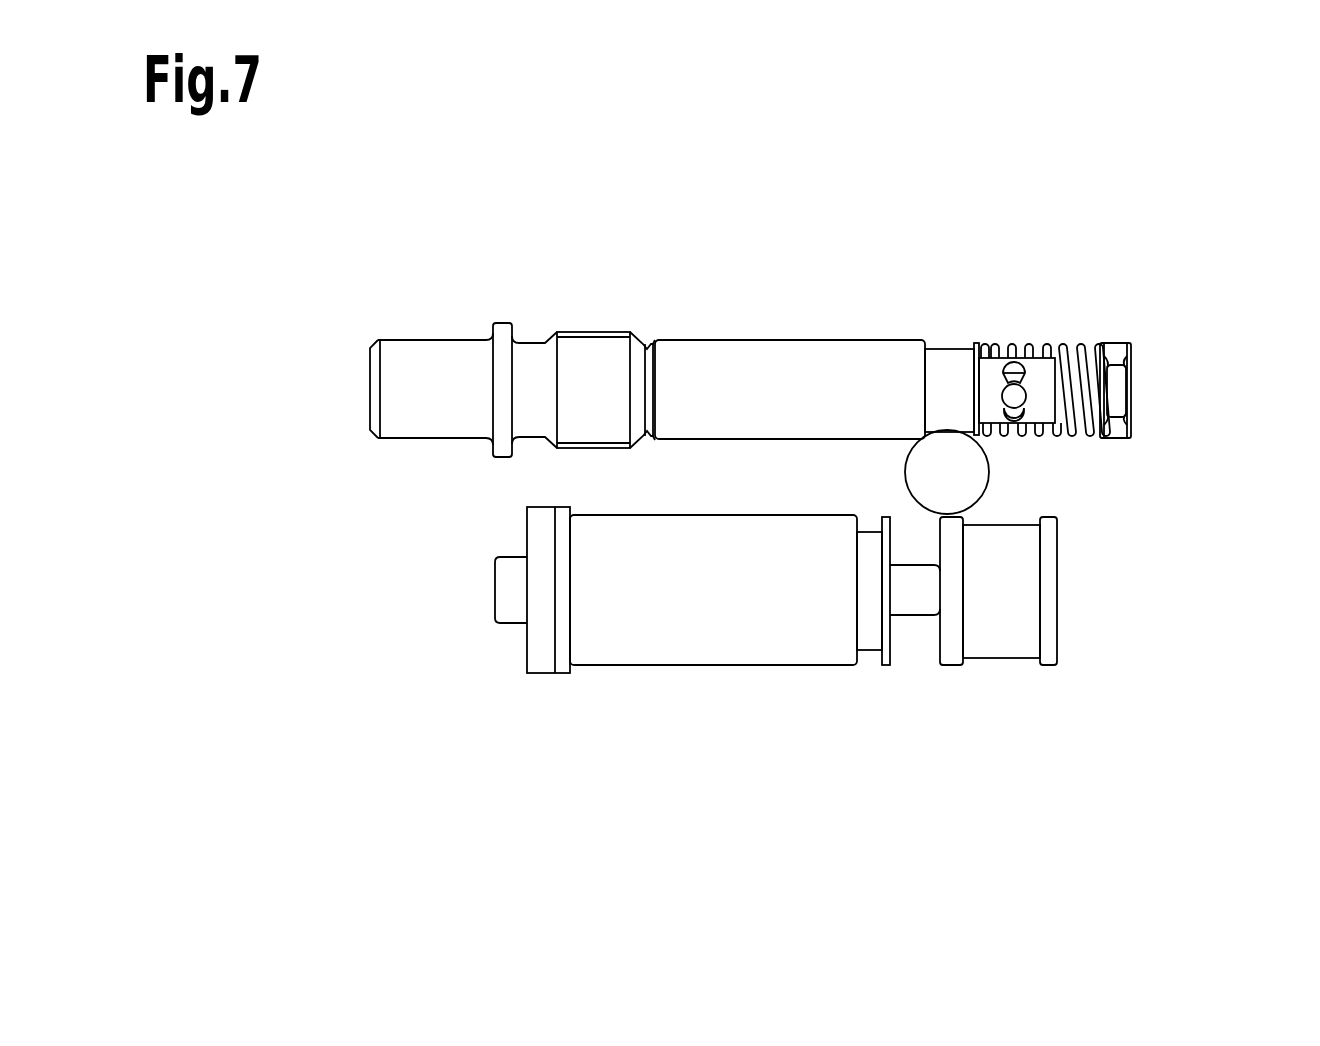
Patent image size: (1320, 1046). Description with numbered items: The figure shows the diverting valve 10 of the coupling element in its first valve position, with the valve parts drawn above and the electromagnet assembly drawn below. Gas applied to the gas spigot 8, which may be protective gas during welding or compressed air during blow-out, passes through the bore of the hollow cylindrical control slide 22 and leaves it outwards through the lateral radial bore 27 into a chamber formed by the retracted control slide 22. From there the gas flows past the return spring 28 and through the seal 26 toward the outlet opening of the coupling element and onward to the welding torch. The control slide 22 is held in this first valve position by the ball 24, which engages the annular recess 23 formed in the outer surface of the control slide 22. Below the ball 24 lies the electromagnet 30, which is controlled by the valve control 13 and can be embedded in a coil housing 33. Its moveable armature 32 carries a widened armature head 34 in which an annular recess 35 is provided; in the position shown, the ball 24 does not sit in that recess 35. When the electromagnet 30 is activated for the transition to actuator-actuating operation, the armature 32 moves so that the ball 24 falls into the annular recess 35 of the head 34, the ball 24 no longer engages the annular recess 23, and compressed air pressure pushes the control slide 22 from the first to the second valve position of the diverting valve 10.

The gas spigot 8 is at (398, 358).
The diverting valve 10 is at (864, 284).
The valve control 13 is at (542, 655).
The control slide 22 is at (695, 355).
The annular recess 23 is at (948, 345).
The ball 24 is at (965, 473).
The seal 26 is at (1118, 352).
The radial bore 27 is at (1018, 373).
The return spring 28 is at (1012, 346).
The electromagnet 30 is at (698, 733).
The armature 32 is at (910, 600).
The coil housing 33 is at (873, 638).
The armature head 34 is at (1028, 628).
The annular recess 35 is at (995, 658).